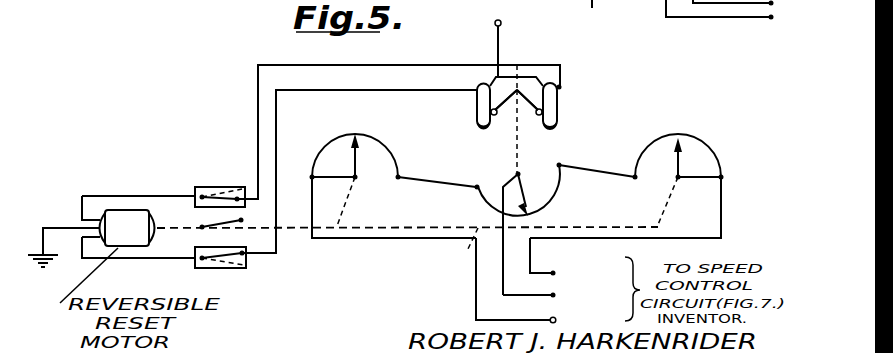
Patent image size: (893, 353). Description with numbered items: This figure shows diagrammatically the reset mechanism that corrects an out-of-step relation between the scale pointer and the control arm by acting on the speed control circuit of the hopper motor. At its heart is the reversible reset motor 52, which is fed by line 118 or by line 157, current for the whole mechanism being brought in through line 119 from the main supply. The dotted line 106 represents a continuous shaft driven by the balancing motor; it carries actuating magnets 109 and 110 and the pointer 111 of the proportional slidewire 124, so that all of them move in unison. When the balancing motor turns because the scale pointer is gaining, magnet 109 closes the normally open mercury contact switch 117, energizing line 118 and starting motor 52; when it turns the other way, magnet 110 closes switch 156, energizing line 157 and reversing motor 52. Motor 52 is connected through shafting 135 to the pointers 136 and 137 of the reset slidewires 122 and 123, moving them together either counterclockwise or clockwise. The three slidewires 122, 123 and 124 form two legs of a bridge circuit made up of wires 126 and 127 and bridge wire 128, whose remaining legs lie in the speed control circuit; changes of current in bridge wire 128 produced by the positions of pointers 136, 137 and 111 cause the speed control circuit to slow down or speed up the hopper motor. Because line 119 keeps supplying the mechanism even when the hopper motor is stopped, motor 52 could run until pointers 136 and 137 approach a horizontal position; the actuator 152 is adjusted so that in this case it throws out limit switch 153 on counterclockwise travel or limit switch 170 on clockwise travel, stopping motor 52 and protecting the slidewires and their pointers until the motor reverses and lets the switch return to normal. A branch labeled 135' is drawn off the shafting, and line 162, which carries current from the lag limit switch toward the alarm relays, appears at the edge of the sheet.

The reversible reset motor 52 is at (118, 210).
The actuator 152 is at (202, 225).
The limit switch 153 is at (238, 163).
The limit switch 170 is at (233, 268).
The line 118 is at (257, 115).
The line 157 is at (360, 90).
The line 119 is at (497, 43).
The switch 156 is at (477, 102).
The normally open mercury contact switch 117 is at (558, 120).
The shaft 106 is at (518, 64).
The actuating magnet 110 is at (501, 116).
The actuating magnet 109 is at (542, 101).
The pointer 111 is at (525, 184).
The reset slidewire 122 is at (337, 139).
The pointer 136 is at (358, 156).
The shafting 135 is at (527, 202).
The mechanical connection 135' is at (449, 250).
The proportional slidewire 124 is at (480, 198).
The reset slidewire 123 is at (723, 176).
The pointer 137 is at (678, 157).
The wire 126 is at (553, 273).
The bridge wire 128 is at (553, 295).
The wire 127 is at (556, 319).
The line 162 is at (701, 21).